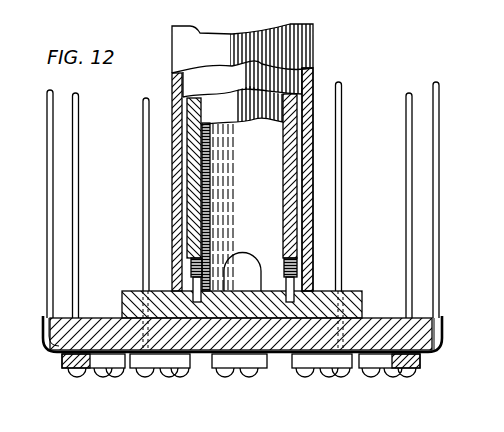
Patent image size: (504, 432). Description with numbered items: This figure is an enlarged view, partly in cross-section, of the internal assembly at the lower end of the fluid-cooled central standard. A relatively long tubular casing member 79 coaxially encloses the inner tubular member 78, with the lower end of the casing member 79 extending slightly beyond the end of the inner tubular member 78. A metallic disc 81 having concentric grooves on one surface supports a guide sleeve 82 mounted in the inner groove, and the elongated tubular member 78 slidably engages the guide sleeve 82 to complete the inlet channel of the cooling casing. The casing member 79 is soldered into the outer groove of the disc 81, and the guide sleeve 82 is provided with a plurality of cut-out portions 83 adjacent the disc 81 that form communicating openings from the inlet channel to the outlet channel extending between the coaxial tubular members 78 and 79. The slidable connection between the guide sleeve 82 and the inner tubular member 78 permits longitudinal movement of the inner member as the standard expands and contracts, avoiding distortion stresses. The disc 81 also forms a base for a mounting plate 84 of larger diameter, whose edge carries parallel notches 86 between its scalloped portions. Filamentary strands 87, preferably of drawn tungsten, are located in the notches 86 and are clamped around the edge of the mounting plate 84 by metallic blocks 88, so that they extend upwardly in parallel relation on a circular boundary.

The tubular member 78 is at (218, 80).
The tubular casing member 79 is at (300, 46).
The metallic disc 81 is at (344, 292).
The guide sleeve 82 is at (208, 105).
The cut-out portions 83 is at (282, 265).
The mounting plate 84 is at (368, 321).
The notches 86 is at (442, 318).
The filamentary strands 87 is at (143, 181).
The metallic blocks 88 is at (156, 364).